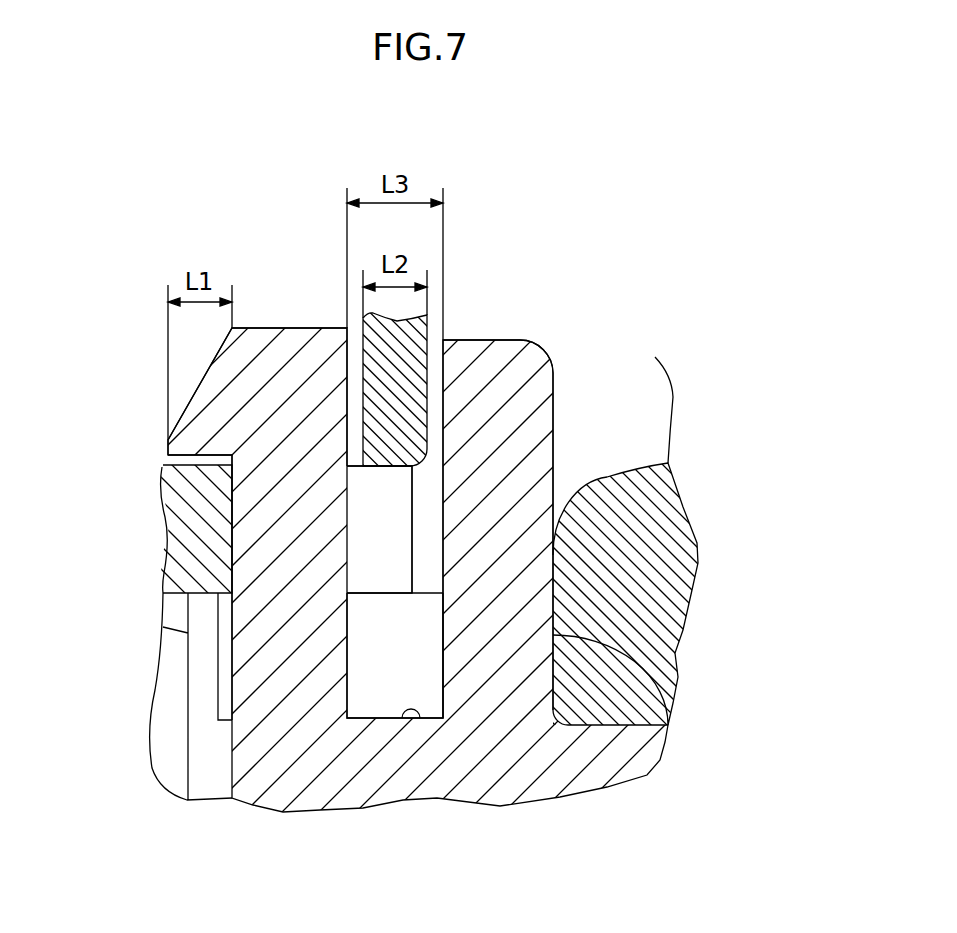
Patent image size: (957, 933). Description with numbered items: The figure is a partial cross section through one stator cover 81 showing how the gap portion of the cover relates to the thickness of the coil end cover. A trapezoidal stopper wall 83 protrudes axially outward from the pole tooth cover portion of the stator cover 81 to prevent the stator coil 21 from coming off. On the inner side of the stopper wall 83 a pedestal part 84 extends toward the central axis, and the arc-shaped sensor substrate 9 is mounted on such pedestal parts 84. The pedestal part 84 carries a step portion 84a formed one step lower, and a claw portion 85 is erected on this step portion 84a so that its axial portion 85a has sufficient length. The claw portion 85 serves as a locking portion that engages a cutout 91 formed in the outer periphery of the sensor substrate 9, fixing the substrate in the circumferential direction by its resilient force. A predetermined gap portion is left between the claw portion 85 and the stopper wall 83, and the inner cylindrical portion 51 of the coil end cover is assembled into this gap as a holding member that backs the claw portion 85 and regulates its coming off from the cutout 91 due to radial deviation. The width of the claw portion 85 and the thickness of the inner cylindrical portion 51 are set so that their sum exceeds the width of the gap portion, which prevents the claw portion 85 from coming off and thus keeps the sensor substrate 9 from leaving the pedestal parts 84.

The stator cover 81 is at (560, 777).
The claw portion 85 is at (290, 343).
The axial portion 85a is at (243, 650).
The stopper wall 83 is at (540, 422).
The pedestal part 84 is at (430, 590).
The step portion 84a is at (420, 720).
The cutout 91 is at (363, 573).
The inner cylindrical portion 51 is at (397, 363).
The sensor substrate 9 is at (182, 540).
The stator coil 21 is at (655, 490).